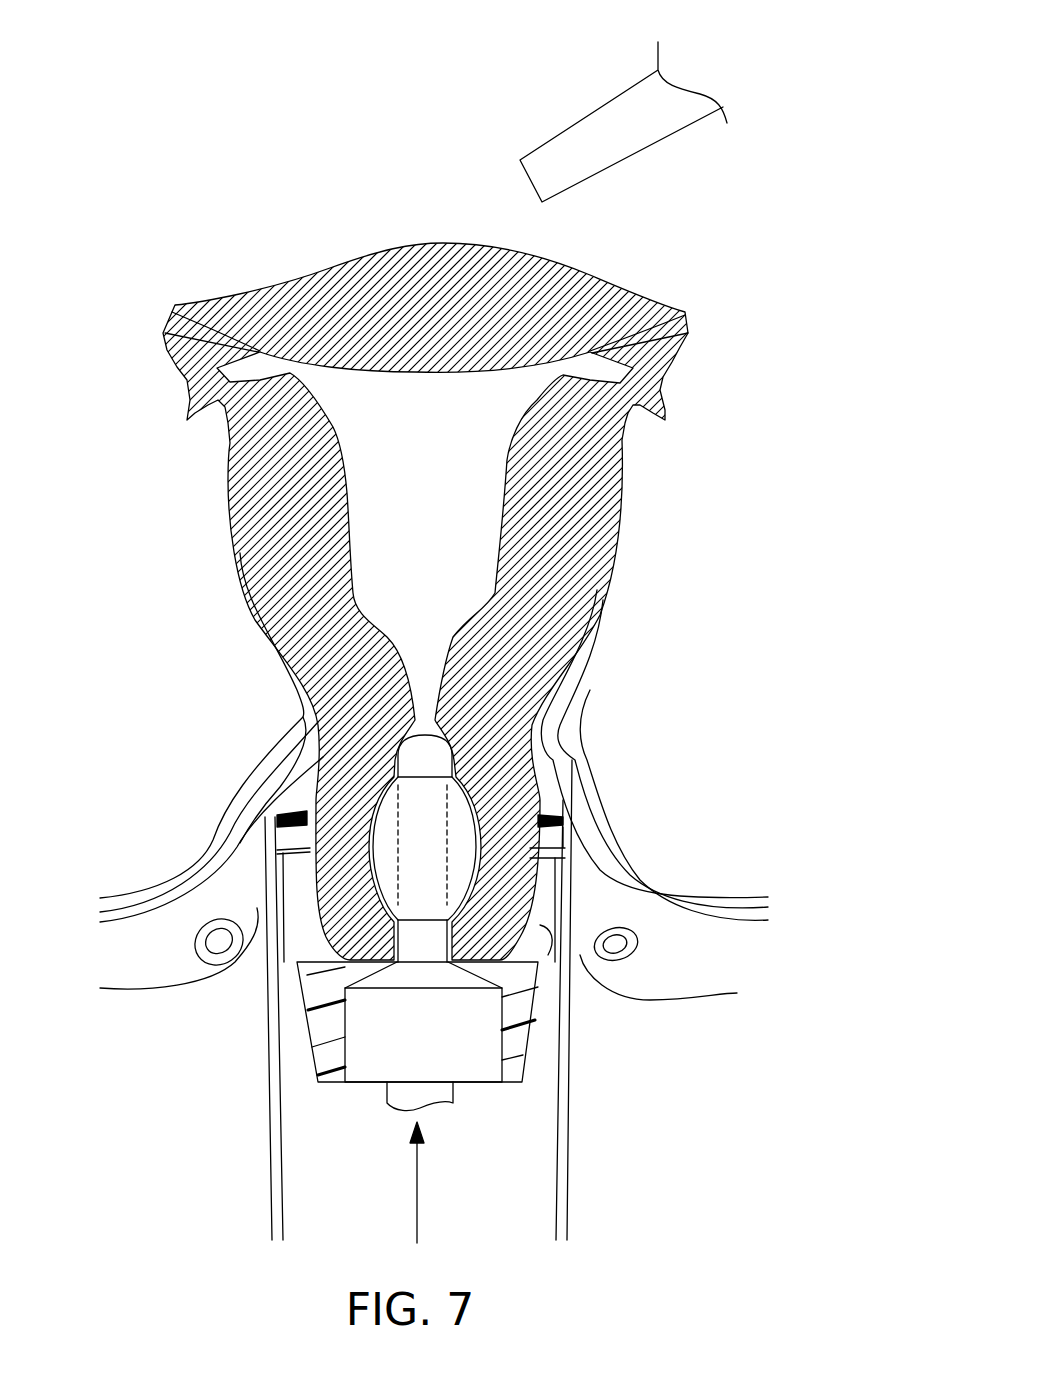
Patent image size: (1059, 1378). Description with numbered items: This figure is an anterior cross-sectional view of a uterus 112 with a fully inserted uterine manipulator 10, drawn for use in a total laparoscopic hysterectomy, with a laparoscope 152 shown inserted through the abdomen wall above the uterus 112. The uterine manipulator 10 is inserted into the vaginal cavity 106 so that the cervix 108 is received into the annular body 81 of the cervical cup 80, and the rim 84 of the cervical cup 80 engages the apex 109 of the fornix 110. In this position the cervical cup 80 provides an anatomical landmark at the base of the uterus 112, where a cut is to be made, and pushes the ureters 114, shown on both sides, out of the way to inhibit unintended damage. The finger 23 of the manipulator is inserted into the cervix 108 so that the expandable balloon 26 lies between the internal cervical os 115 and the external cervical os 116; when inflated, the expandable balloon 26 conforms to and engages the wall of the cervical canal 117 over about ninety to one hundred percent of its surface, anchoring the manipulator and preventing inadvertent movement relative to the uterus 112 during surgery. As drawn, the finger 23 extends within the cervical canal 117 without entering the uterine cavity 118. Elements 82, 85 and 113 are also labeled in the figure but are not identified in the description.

The uterine manipulator 10 is at (470, 1067).
The finger 23 is at (423, 753).
The expandable balloon 26 is at (540, 963).
The cervical cup 80 is at (543, 902).
The annular body 81 is at (295, 935).
The threaded base 82 is at (322, 1022).
The rim 84 is at (552, 830).
The inner tube 85 is at (545, 923).
The vaginal cavity 106 is at (508, 1213).
The cervix 108 is at (440, 946).
The apex 109 is at (285, 795).
The fornix 110 is at (563, 678).
The uterus 112 is at (573, 270).
The fundus 113 is at (358, 390).
The ureters 114 is at (213, 939).
The internal cervical os 115 is at (400, 677).
The external cervical os 116 is at (383, 927).
The cervical canal 117 is at (312, 843).
The uterine cavity 118 is at (480, 522).
The laparoscope 152 is at (557, 126).